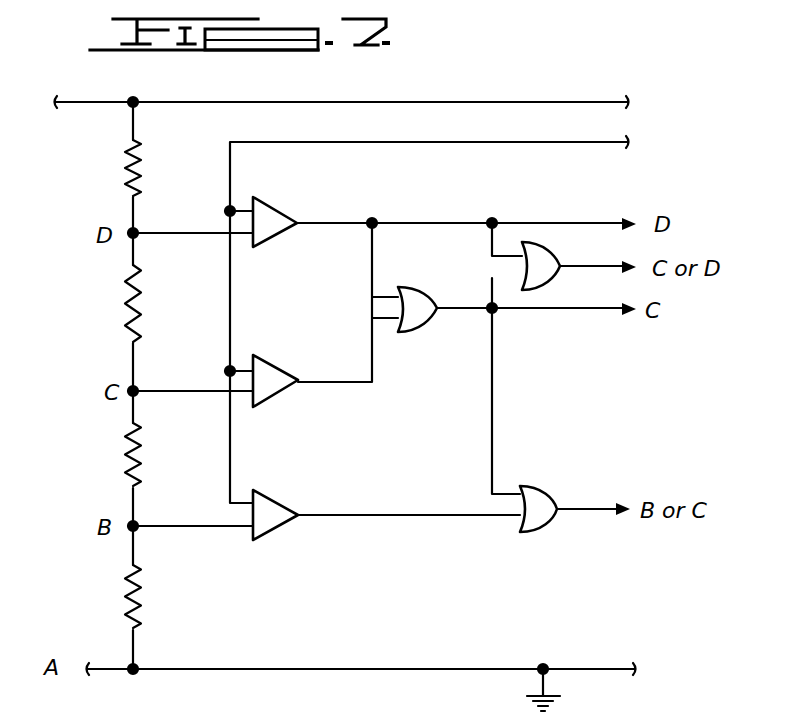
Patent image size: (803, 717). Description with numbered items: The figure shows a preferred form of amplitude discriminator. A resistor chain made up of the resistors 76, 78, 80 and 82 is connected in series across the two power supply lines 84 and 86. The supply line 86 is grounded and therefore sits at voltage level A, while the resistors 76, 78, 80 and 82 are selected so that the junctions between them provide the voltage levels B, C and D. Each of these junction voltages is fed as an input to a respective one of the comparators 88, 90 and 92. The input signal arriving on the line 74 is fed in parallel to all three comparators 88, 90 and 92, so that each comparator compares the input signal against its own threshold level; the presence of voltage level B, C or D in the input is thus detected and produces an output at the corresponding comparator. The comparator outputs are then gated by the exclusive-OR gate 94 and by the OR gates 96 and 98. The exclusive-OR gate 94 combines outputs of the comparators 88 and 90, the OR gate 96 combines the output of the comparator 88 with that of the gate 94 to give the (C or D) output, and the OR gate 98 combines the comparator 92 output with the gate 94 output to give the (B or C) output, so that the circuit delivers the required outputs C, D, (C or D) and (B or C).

The reference voltage line 74 is at (458, 143).
The resistor 76 is at (128, 175).
The resistor 78 is at (128, 314).
The resistor 80 is at (128, 459).
The resistor 82 is at (128, 598).
The power supply line 84 is at (333, 72).
The supply line 86 is at (442, 668).
The comparator 88 is at (278, 214).
The comparator 90 is at (276, 369).
The comparator 92 is at (282, 503).
The exclusive-OR gate 94 is at (428, 330).
The OR gate 96 is at (555, 258).
The OR gate 98 is at (543, 488).